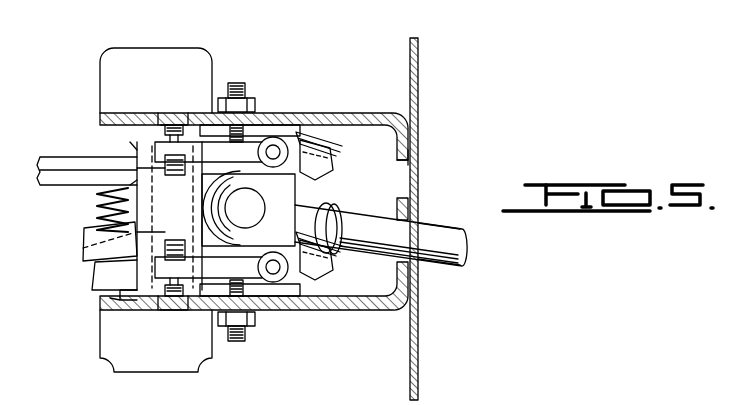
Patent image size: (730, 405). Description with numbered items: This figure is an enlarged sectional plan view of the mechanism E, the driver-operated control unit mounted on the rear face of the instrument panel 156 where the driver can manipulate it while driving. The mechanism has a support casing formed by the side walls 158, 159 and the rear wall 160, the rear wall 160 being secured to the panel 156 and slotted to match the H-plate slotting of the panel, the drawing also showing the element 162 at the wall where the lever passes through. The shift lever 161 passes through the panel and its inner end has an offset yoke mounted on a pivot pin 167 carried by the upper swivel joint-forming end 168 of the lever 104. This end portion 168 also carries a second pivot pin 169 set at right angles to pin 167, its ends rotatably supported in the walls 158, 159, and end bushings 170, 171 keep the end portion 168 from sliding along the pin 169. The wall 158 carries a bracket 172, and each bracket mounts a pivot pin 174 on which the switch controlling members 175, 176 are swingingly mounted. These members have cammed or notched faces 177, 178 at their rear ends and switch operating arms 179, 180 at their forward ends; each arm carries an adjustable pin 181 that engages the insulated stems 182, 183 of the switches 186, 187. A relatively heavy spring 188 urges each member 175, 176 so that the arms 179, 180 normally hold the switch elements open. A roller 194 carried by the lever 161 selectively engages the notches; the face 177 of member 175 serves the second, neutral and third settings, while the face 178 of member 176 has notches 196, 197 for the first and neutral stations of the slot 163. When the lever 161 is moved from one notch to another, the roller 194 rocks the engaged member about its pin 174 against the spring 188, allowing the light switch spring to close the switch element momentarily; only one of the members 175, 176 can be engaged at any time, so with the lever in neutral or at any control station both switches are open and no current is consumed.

The mechanism E is at (353, 109).
The lever 104 is at (62, 157).
The instrument panel 156 is at (419, 80).
The side wall 158 is at (305, 125).
The side wall 159 is at (318, 303).
The rear wall 160 is at (418, 131).
The lever 161 is at (462, 243).
The bushing 162 is at (418, 222).
The slot 163 is at (410, 158).
The pivot pin 167 is at (248, 208).
The swivel joint-forming end 168 is at (132, 237).
The pivot pin 169 is at (135, 268).
The end bushing 170 is at (130, 147).
The end bushing 171 is at (120, 291).
The bracket 172 is at (282, 128).
The pivot pin 174 is at (270, 150).
The switch controlling member 175 is at (335, 138).
The switch controlling member 176 is at (248, 322).
The cammed or notched face 177 is at (318, 178).
The cammed or notched face 178 is at (308, 218).
The switch operating arm 179 is at (146, 125).
The switch operating arm 180 is at (148, 297).
The adjustable pin 181 is at (182, 113).
The insulated stem 182 is at (157, 112).
The insulated stem 183 is at (158, 301).
The switch 186 is at (118, 50).
The switch 187 is at (100, 357).
The spring 188 is at (335, 146).
The roller 194 is at (332, 222).
The notch 196 is at (92, 205).
The notch 197 is at (95, 262).